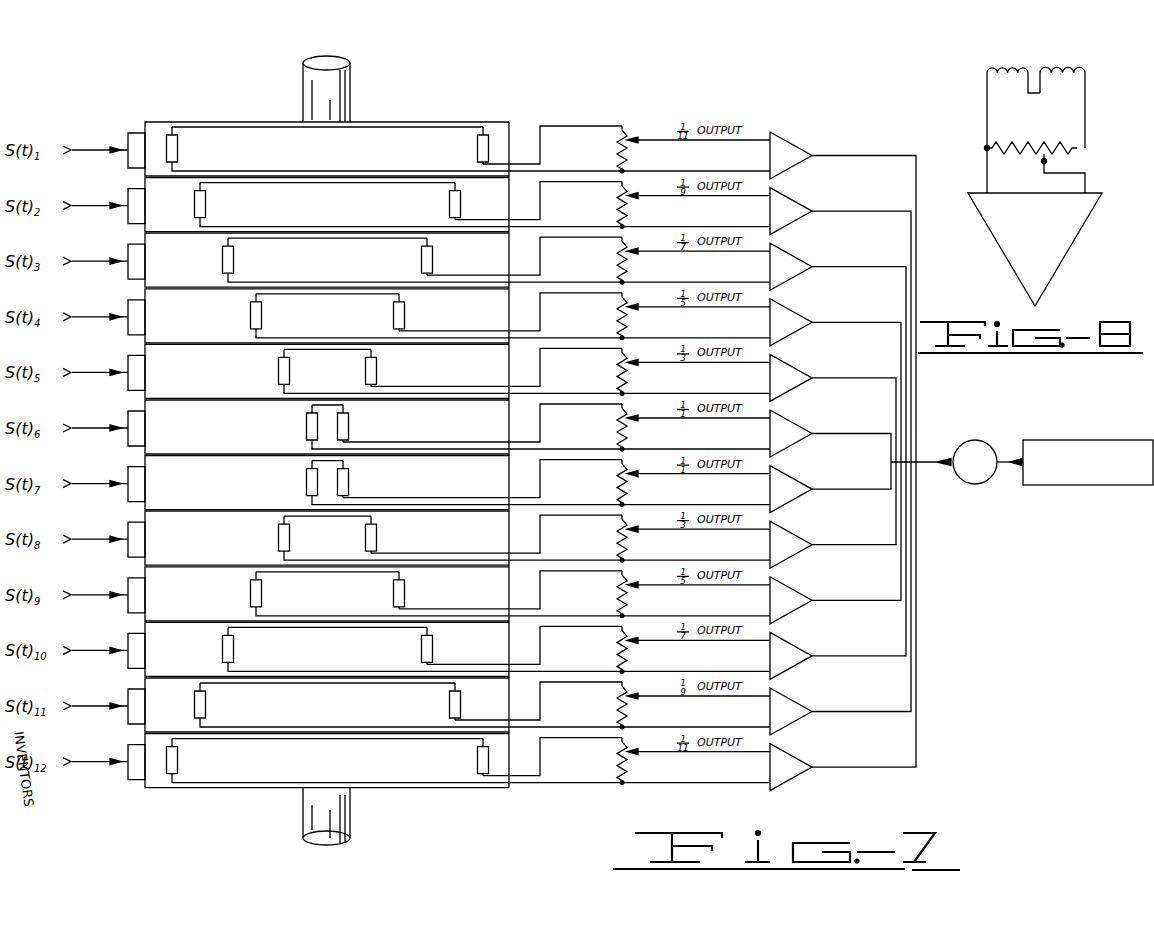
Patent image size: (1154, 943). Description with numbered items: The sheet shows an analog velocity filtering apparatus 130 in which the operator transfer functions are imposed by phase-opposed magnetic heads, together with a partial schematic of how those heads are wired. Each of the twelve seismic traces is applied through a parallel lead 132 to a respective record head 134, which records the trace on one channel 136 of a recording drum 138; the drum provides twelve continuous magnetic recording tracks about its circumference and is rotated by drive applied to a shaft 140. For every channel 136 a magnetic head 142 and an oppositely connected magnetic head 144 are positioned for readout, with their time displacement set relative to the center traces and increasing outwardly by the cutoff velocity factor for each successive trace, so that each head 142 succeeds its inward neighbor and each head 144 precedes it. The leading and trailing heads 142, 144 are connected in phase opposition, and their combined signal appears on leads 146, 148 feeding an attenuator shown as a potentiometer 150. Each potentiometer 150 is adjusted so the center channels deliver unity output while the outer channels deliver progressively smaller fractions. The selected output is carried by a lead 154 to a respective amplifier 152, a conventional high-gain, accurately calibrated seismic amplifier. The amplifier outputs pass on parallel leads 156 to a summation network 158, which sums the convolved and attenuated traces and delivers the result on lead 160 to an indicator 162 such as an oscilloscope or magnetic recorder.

In FIG. 7, the velocity filtering apparatus 130 is at (470, 84).
In FIG. 7, the parallel leads 132 is at (106, 150).
In FIG. 7, the record heads 134 is at (133, 132).
In FIG. 7, the channel 136 is at (226, 127).
In FIG. 7, the recording drum 138 is at (374, 120).
In FIG. 7, the shaft 140 is at (341, 79).
In FIG. 7, the magnetic head 142 is at (180, 150).
In FIG. 8, the magnetic head 142 is at (1008, 66).
In FIG. 7, the oppositely connected magnetic head 144 is at (477, 150).
In FIG. 8, the oppositely connected magnetic head 144 is at (1062, 66).
In FIG. 7, the lead 146 is at (588, 126).
In FIG. 8, the lead 146 is at (1085, 100).
In FIG. 7, the lead 148 is at (588, 168).
In FIG. 8, the lead 148 is at (990, 128).
In FIG. 7, the potentiometer 150 is at (626, 131).
In FIG. 8, the potentiometer 150 is at (1072, 146).
In FIG. 7, the amplifier 152 is at (793, 146).
In FIG. 8, the amplifier 152 is at (1010, 265).
In FIG. 7, the lead 154 is at (673, 143).
In FIG. 8, the lead 154 is at (1088, 183).
In FIG. 7, the parallel leads 156 is at (848, 158).
In FIG. 7, the summation network 158 is at (969, 485).
In FIG. 7, the lead 160 is at (1012, 468).
In FIG. 7, the indicator 162 is at (1090, 440).